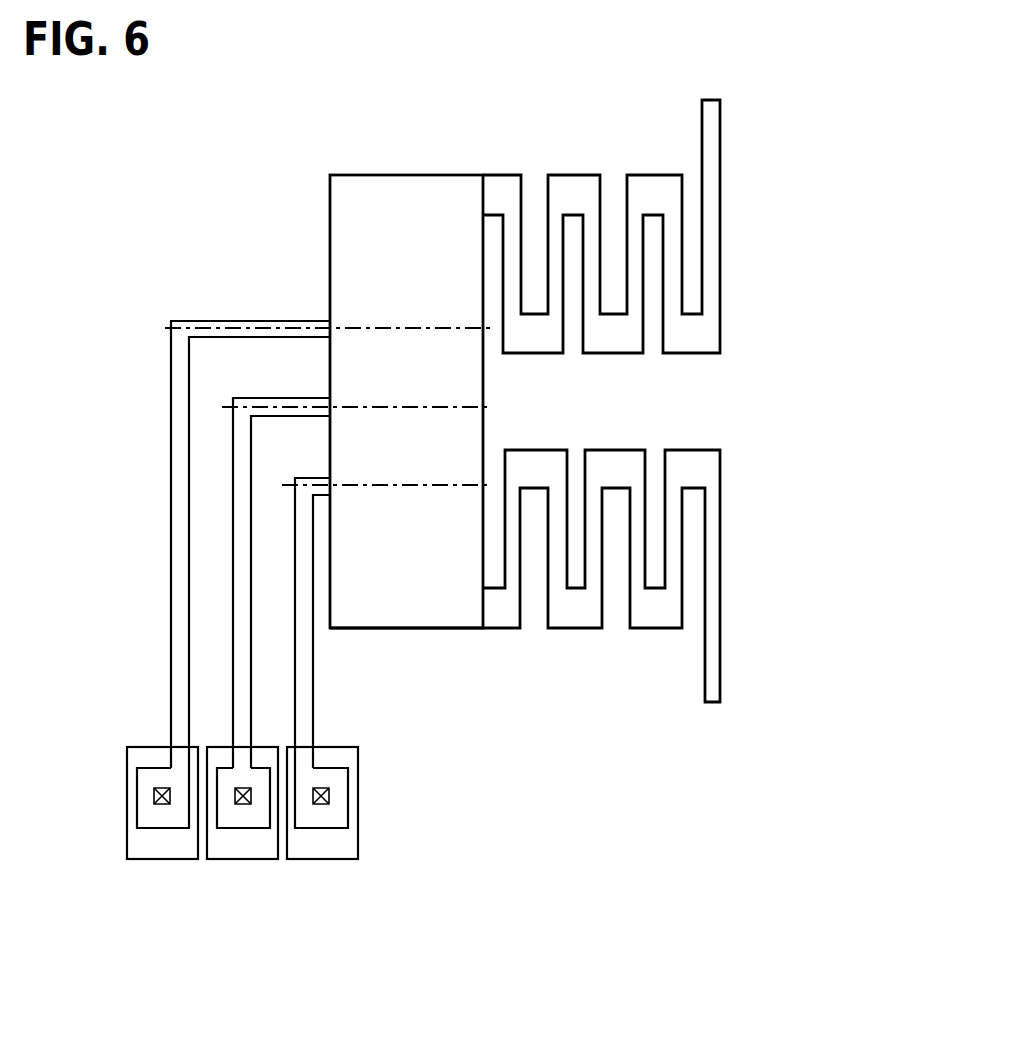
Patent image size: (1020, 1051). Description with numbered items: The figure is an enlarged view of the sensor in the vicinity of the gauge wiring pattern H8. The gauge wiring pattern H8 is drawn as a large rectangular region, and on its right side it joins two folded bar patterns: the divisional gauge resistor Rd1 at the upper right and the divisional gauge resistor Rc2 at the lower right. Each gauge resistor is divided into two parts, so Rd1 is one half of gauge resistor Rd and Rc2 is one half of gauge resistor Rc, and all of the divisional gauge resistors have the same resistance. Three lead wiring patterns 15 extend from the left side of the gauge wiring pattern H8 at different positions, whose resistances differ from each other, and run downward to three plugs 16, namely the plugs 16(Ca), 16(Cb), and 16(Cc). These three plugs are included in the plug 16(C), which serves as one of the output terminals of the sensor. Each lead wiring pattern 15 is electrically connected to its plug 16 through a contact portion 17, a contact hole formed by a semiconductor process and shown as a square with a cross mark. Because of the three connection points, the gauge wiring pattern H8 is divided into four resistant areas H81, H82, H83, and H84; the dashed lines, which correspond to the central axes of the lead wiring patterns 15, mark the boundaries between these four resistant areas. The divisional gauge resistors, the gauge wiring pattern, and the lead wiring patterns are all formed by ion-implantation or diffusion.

The gauge wiring pattern H8 is at (436, 214).
The resistant area H84 is at (444, 274).
The resistant area H83 is at (444, 385).
The resistant area H82 is at (444, 467).
The resistant area H81 is at (444, 570).
The divisional gauge resistor Rd1 is at (577, 187).
The divisional gauge resistor Rc2 is at (577, 615).
The lead wiring pattern 15 is at (242, 672).
The plug 16 is at (432, 922).
The contact portion 17 is at (155, 795).